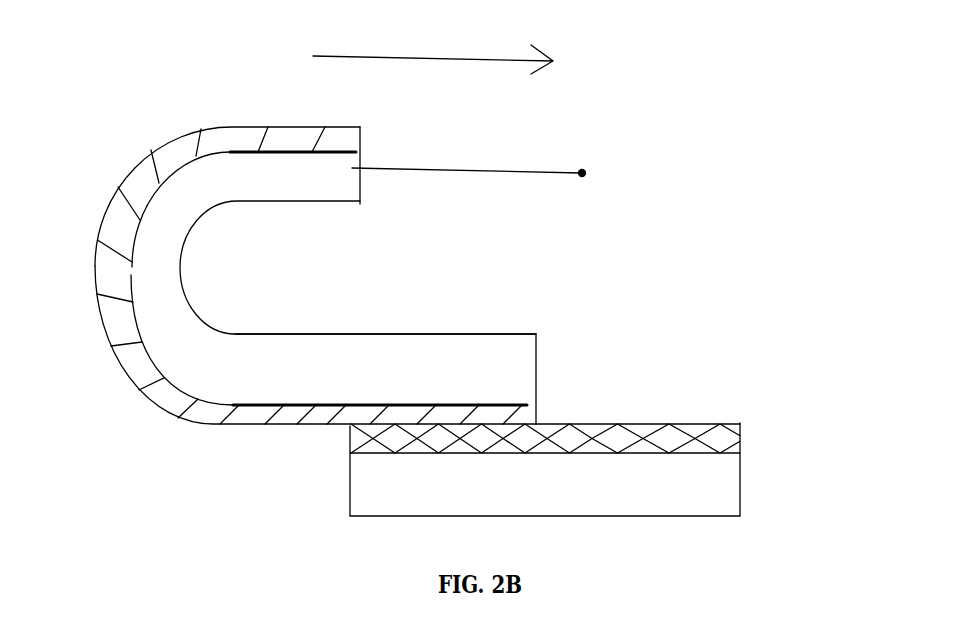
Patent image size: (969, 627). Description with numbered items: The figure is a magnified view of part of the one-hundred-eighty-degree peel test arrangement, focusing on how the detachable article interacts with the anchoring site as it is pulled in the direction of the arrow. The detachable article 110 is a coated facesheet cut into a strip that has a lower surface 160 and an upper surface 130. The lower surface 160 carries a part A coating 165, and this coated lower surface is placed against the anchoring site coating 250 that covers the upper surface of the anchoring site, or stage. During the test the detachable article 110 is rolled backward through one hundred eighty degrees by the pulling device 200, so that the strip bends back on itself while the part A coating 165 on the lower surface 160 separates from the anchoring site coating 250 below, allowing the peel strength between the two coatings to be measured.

The detachable article 110 is at (522, 371).
The upper surface 130 is at (378, 333).
The lower surface 160 is at (198, 418).
The part A coating 165 is at (238, 142).
The pulling device 200 is at (708, 489).
The anchoring site coating 250 is at (703, 430).